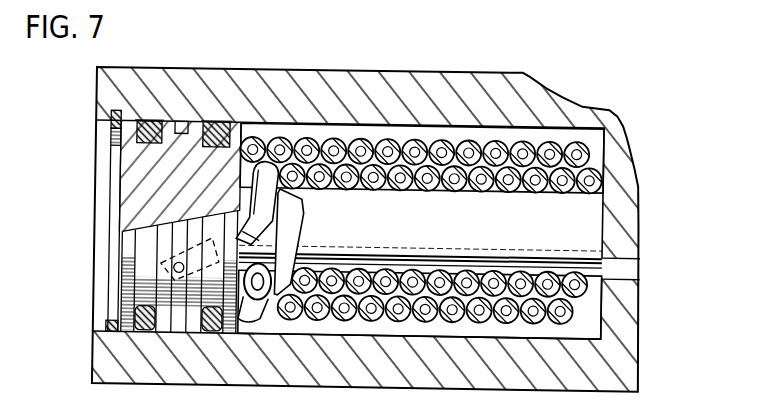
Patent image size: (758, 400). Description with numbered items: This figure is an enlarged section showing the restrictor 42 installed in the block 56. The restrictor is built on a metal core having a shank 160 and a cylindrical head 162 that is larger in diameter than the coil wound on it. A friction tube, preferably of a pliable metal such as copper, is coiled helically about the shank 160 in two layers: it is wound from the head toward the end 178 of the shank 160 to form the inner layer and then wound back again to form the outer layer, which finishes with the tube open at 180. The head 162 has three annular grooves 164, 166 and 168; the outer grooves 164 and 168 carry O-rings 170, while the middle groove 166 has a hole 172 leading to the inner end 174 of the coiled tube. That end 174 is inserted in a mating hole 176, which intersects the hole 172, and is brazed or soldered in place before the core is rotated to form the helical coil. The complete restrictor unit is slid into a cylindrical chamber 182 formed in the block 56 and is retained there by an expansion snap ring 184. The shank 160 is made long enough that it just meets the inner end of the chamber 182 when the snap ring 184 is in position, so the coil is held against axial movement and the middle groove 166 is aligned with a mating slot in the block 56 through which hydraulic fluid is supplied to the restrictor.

The block 56 is at (371, 76).
The restrictor 42 is at (433, 128).
The cylindrical chamber 182 is at (489, 130).
The end of shank 178 is at (606, 214).
The shank 160 is at (512, 220).
The cylindrical head 162 is at (182, 176).
The annular groove 164 is at (152, 119).
The middle annular groove 166 is at (183, 119).
The annular groove 168 is at (213, 119).
The O-ring 170 is at (146, 119).
The hole 172 is at (177, 266).
The inner end of coiled tube 174 is at (252, 211).
The mating hole 176 is at (162, 256).
The open tube end 180 is at (273, 268).
The expansion snap ring 184 is at (111, 126).